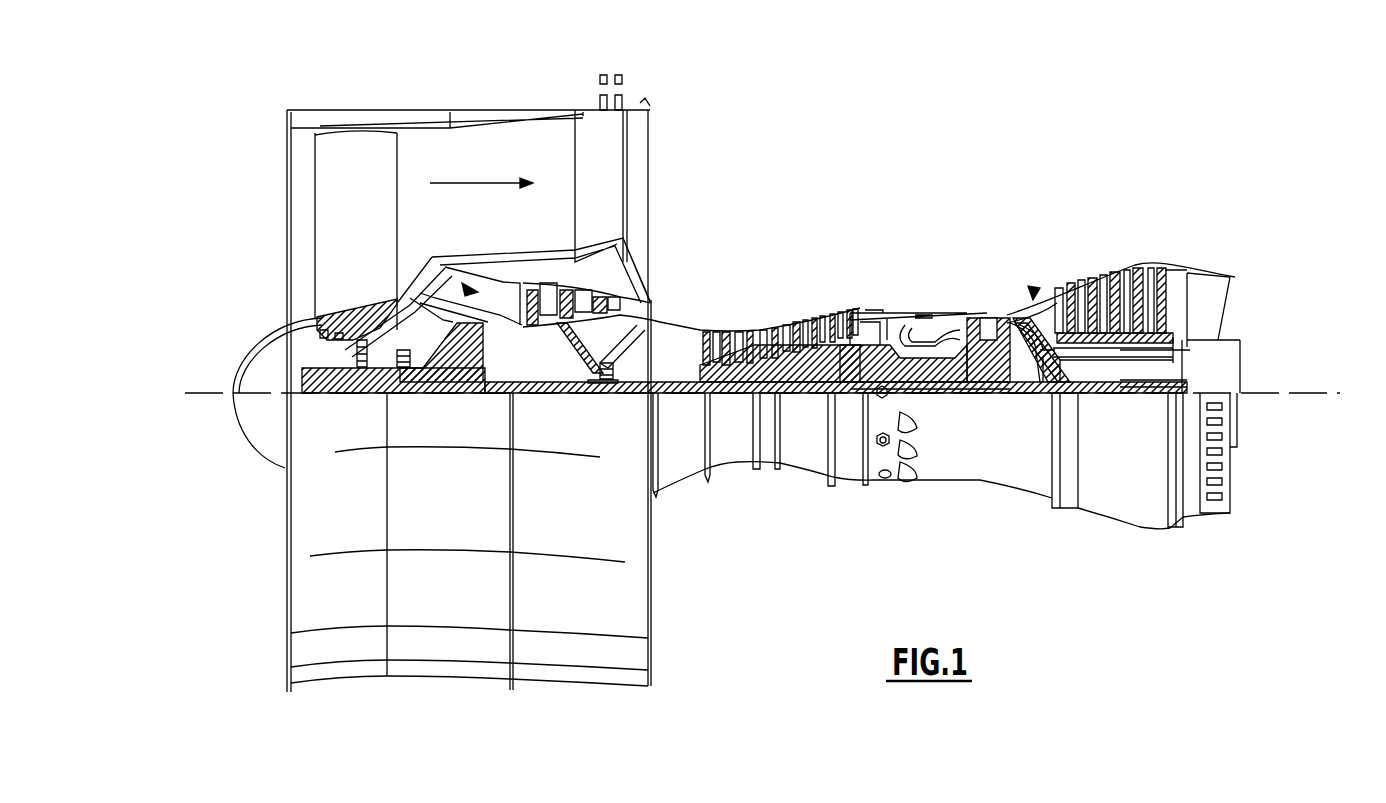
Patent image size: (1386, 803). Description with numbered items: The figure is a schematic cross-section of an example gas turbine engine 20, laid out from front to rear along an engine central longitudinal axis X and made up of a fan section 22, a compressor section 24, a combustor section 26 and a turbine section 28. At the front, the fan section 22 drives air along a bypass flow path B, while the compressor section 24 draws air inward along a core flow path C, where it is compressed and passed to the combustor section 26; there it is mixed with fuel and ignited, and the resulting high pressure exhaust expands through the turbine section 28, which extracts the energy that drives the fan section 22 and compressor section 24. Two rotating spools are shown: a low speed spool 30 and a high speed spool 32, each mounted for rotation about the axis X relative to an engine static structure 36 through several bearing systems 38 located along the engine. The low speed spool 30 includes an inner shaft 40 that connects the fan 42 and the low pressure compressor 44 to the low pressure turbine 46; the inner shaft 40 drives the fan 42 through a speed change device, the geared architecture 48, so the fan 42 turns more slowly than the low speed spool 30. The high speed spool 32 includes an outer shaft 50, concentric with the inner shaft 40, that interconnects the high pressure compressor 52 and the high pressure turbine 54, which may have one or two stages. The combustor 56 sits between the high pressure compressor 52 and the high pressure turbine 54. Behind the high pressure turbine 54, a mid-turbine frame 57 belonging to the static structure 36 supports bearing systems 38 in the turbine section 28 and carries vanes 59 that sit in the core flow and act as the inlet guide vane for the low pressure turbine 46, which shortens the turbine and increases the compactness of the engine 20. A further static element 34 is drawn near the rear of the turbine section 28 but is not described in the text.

The gas turbine engine 20 is at (927, 160).
The fan section 22 is at (273, 85).
The compressor section 24 is at (505, 228).
The combustor section 26 is at (960, 228).
The turbine section 28 is at (970, 228).
The low speed spool 30 is at (806, 394).
The high speed spool 32 is at (847, 352).
The turbine exhaust case 34 is at (1123, 393).
The engine static structure 36 is at (847, 481).
The bearing systems 38 is at (365, 370).
The inner shaft 40 is at (663, 393).
The fan 42 is at (340, 236).
The low pressure compressor section 44 is at (583, 293).
The low pressure turbine section 46 is at (1125, 293).
The geared architecture 48 is at (478, 378).
The outer shaft 50 is at (933, 390).
The high pressure compressor section 52 is at (777, 327).
The high pressure turbine section 54 is at (990, 320).
The combustor 56 is at (925, 333).
The mid-turbine frame 57 is at (1033, 300).
The vanes 59 is at (1060, 393).
The bypass flow path B is at (470, 183).
The core flow path C is at (478, 292).
The engine central longitudinal axis X is at (1324, 393).